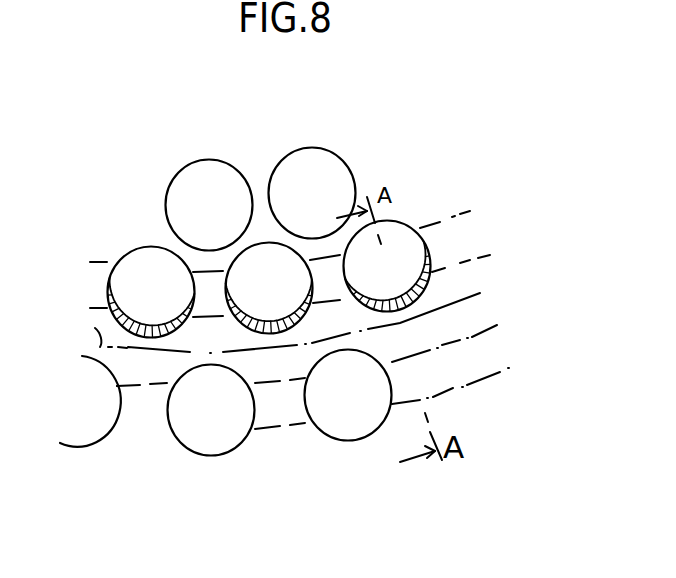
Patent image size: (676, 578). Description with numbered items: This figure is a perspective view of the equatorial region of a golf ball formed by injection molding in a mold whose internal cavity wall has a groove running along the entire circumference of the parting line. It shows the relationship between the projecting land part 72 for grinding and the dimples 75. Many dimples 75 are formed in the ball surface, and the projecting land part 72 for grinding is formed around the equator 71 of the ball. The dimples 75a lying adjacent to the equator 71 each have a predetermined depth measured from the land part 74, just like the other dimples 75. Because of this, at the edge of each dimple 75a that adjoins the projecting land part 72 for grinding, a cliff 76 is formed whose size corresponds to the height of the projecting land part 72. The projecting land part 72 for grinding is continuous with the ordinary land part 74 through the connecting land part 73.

The equator 71 is at (92, 327).
The projecting land part for grinding 72 is at (482, 316).
The connecting land part 73 is at (447, 245).
The land part 74 is at (413, 203).
The dimples 75 is at (318, 168).
The dimples adjacent to the equator 75a is at (183, 430).
The cliff 76 is at (109, 300).